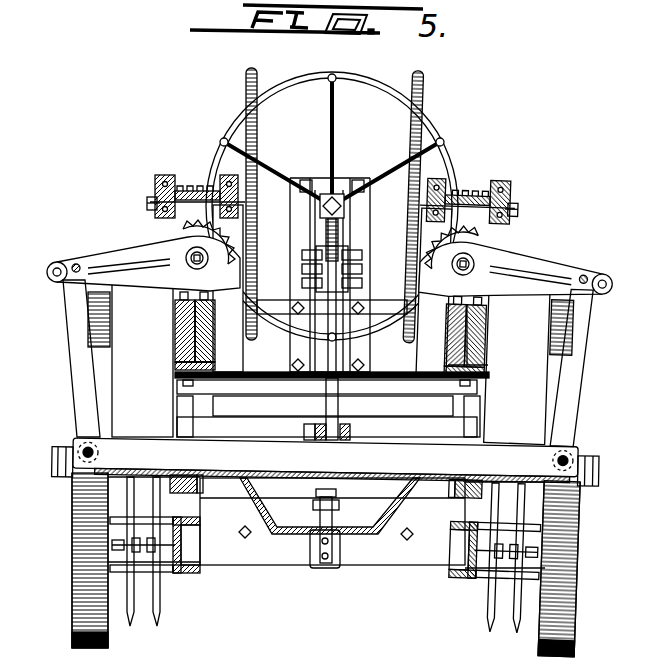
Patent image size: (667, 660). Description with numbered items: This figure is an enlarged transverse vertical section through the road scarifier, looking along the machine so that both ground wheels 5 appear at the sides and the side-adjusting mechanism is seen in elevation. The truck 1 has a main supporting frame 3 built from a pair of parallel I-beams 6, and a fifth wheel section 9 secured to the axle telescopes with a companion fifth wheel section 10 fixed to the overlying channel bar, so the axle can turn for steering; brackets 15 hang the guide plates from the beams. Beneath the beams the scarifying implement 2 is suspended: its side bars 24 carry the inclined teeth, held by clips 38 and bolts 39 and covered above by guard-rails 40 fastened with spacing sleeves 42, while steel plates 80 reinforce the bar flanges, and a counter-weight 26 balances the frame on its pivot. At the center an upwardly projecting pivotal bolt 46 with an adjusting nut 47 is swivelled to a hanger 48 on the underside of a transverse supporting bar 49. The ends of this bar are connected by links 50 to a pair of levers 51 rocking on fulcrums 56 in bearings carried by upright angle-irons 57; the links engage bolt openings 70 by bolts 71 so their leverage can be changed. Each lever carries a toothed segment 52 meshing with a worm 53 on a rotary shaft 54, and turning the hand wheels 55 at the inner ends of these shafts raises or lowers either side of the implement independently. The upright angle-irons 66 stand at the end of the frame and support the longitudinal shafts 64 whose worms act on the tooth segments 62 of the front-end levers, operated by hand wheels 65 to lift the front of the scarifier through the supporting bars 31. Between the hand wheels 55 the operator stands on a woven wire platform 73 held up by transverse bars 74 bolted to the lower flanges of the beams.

The truck 1 is at (468, 354).
The scarifying implement 2 is at (228, 556).
The main supporting frame 3 is at (196, 326).
The wheels 5 is at (72, 560).
The I-beams 6 is at (186, 362).
The fifth wheel section 9 is at (320, 438).
The fifth wheel section 10 is at (308, 436).
The brackets 15 is at (178, 428).
The side bars 24 is at (187, 574).
The counter-weight 26 is at (392, 566).
The supporting bars 31 is at (339, 411).
The clips 38 is at (117, 543).
The bolts 39 is at (126, 548).
The guard-rails 40 is at (210, 474).
The spacing sleeves 42 is at (137, 507).
The pivotal bolt 46 is at (334, 566).
The adjusting nut 47 is at (316, 505).
The hanger 48 is at (303, 534).
The supporting bar 49 is at (402, 463).
The links 50 is at (76, 384).
The levers 51 is at (106, 262).
The toothed segments 52 is at (175, 233).
The worms 53 is at (186, 190).
The rotary shafts 54 is at (156, 190).
The hand wheels 55 is at (247, 82).
The fulcrums 56 is at (330, 255).
The angle-irons 57 is at (175, 310).
The tooth segments 62 is at (342, 238).
The shafts 64 is at (335, 196).
The hand wheels 65 is at (319, 77).
The angle-irons 66 is at (362, 292).
The bolt openings 70 is at (46, 272).
The bolts 71 is at (76, 264).
The platform 73 is at (262, 372).
The transverse bars 74 is at (280, 393).
The steel plates 80 is at (200, 538).